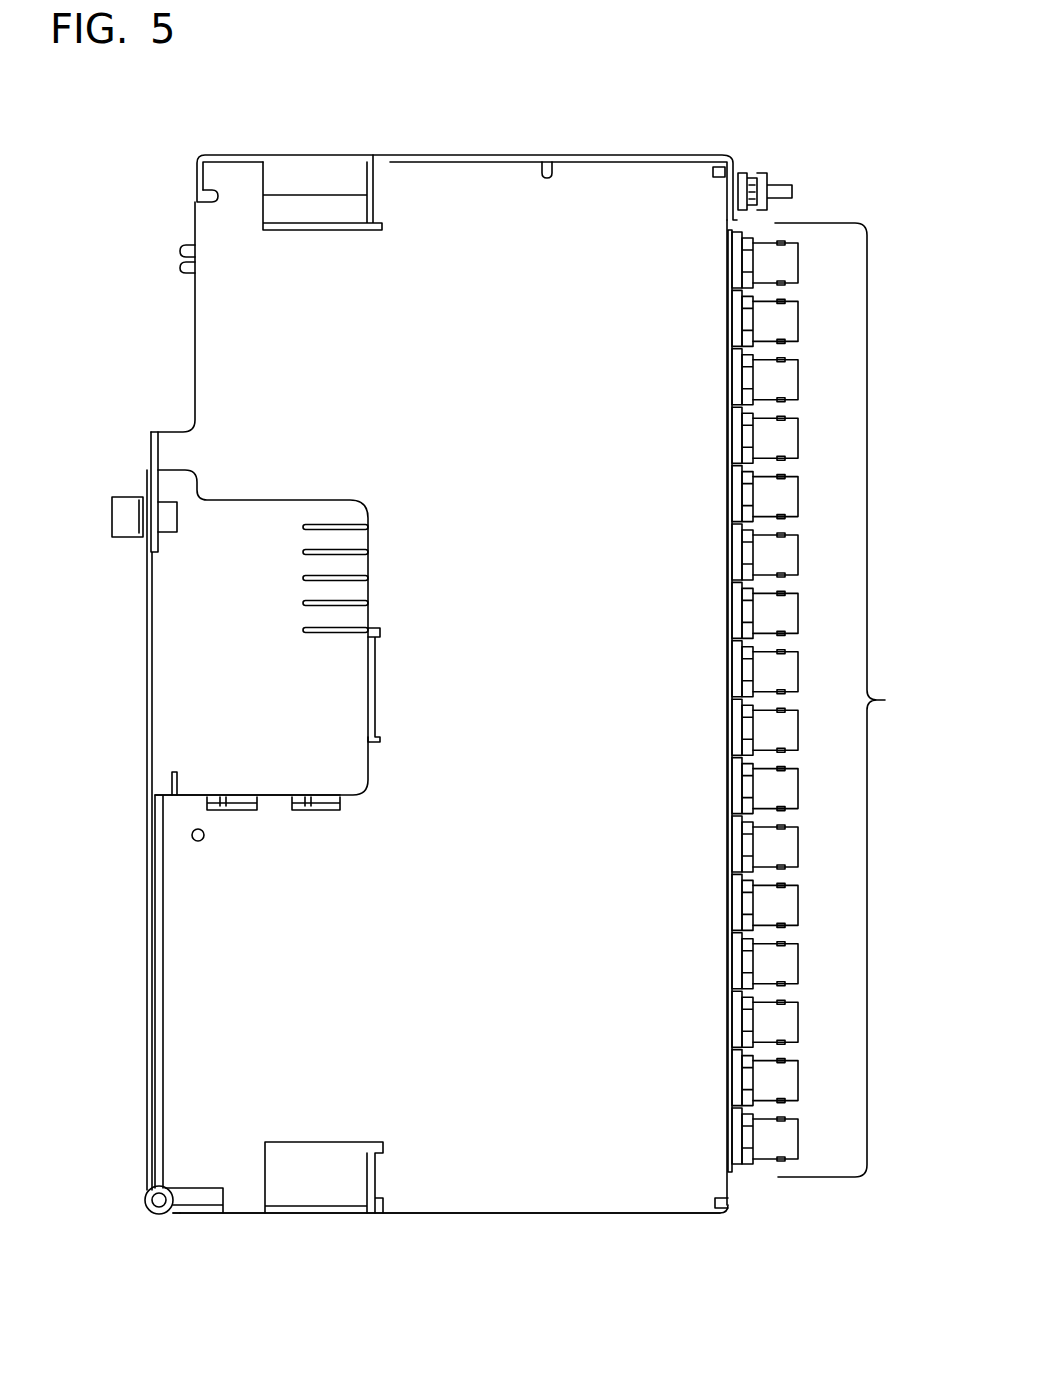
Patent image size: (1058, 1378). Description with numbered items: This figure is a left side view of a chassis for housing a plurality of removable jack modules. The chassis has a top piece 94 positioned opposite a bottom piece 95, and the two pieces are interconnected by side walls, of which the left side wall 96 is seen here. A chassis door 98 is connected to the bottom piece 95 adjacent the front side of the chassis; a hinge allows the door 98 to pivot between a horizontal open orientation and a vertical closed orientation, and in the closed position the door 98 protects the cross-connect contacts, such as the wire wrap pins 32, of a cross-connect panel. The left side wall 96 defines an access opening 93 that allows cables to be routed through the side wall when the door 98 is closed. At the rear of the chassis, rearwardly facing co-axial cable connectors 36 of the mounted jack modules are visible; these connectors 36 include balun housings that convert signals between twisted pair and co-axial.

The wire wrap pins 32 is at (303, 634).
The co-axial cable connectors 36 is at (825, 700).
The access openings 93 is at (177, 702).
The top piece 94 is at (592, 160).
The bottom piece 95 is at (445, 1213).
The left side wall 96 is at (587, 1202).
The chassis door 98 is at (148, 1010).